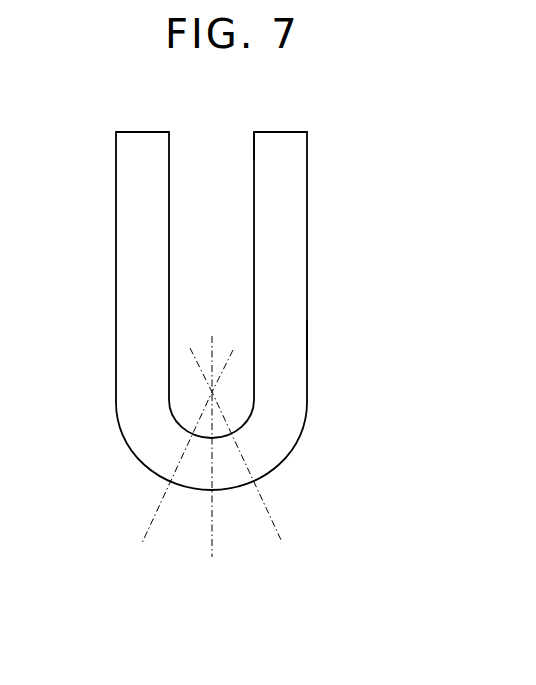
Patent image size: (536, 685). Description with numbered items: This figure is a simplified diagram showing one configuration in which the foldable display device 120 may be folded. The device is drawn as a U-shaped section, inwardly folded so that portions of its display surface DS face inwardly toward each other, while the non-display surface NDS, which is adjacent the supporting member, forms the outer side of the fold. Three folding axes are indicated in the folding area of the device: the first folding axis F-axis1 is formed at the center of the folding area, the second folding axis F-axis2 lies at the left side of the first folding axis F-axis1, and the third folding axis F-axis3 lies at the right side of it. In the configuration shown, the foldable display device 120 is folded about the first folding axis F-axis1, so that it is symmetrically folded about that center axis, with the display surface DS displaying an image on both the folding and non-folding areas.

The foldable display device 120 is at (299, 230).
The display surface DS is at (254, 148).
The non-display surface NDS is at (309, 337).
The first folding axis F-axis1 is at (214, 461).
The second folding axis F-axis2 is at (139, 462).
The third folding axis F-axis3 is at (285, 463).